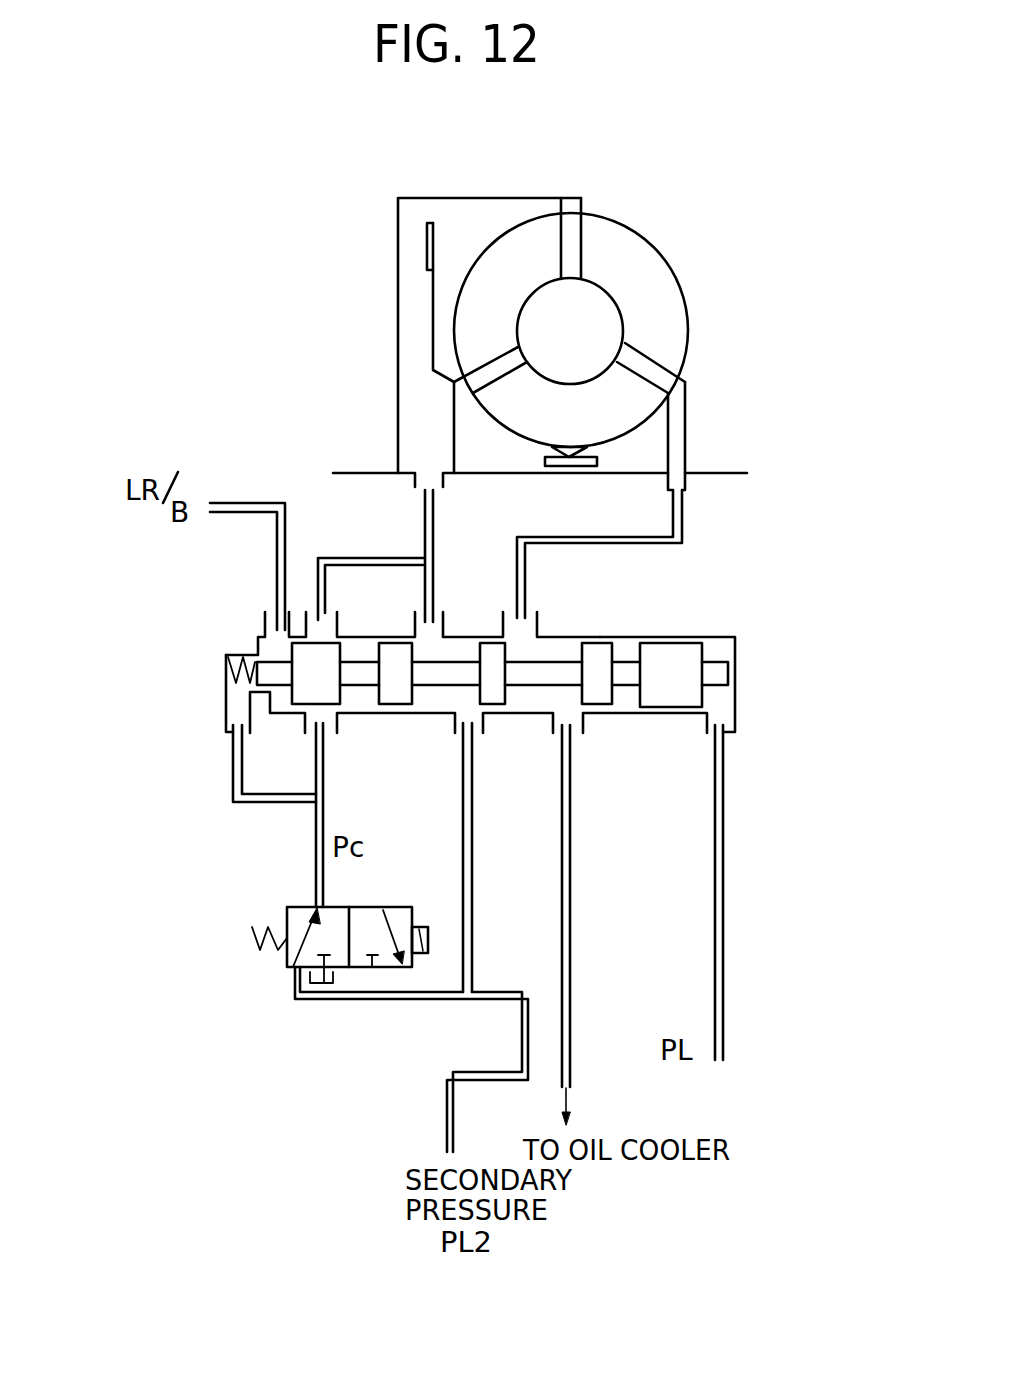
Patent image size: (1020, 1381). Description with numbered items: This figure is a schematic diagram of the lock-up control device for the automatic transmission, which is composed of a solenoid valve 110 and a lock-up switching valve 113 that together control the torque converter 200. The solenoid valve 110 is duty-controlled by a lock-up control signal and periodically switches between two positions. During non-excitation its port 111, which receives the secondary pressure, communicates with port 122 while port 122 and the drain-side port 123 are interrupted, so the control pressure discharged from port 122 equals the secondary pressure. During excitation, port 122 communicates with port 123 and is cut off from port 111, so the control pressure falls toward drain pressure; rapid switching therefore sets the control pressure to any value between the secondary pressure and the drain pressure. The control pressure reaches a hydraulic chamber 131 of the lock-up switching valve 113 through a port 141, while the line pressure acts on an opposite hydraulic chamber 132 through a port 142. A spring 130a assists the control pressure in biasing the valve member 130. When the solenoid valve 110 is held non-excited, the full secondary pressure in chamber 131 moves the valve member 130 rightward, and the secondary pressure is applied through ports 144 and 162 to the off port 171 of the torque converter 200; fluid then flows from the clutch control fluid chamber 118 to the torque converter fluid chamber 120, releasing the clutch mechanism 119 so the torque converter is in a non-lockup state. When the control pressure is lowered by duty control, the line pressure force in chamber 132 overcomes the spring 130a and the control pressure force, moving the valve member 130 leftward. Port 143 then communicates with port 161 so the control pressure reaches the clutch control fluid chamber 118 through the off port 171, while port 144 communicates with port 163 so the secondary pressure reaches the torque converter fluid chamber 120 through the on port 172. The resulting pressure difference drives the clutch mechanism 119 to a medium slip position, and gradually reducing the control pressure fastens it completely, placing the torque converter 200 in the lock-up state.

The solenoid valve 110 is at (318, 934).
The port 111 is at (420, 1003).
The lock-up switching valve 113 is at (627, 635).
The clutch control fluid chamber 118 is at (420, 296).
The clutch mechanism 119 is at (427, 243).
The torque converter fluid chamber 120 is at (478, 213).
The port 122 is at (323, 893).
The port 123 is at (338, 975).
The valve member 130 is at (687, 650).
The spring 130a is at (226, 660).
The hydraulic chamber 131 is at (243, 648).
The hydraulic chamber 132 is at (733, 650).
The port 141 is at (226, 720).
The port 142 is at (742, 718).
The port 143 is at (337, 722).
The port 144 is at (483, 718).
The port 161 is at (337, 622).
The port 162 is at (445, 622).
The port 163 is at (567, 600).
The off port 171 is at (415, 496).
The on port 172 is at (682, 497).
The torque converter 200 is at (605, 215).